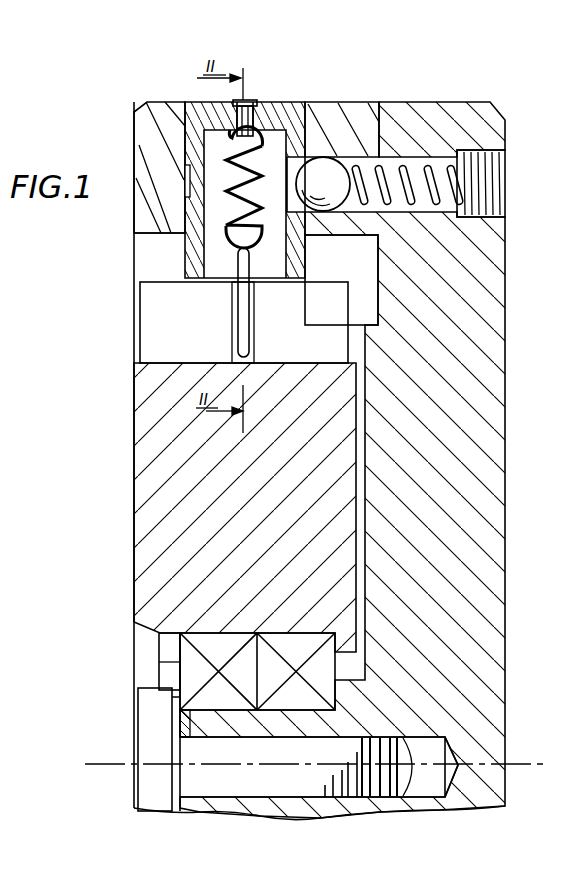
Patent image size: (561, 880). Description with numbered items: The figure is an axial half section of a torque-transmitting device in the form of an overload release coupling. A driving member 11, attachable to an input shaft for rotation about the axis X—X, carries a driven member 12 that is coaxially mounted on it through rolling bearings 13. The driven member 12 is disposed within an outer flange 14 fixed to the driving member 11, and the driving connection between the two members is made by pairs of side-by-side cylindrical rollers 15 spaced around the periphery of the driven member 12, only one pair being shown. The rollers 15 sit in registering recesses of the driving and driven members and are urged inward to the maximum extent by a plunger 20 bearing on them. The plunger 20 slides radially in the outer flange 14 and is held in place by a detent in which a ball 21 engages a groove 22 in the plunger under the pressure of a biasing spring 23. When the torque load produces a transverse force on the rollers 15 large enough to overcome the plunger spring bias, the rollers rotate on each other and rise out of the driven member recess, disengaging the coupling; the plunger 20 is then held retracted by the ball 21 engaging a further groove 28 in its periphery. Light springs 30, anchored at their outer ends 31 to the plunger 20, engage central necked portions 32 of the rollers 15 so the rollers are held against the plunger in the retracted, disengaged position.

The driving member 11 is at (492, 528).
The driven member 12 is at (134, 407).
The rolling bearings 13 is at (159, 662).
The outer flange 14 is at (157, 138).
The cylindrical rollers 15 is at (160, 318).
The plunger 20 is at (203, 112).
The ball 21 is at (323, 175).
The groove 22 is at (302, 160).
The biasing spring 23 is at (402, 162).
The further groove 28 is at (186, 235).
The light springs 30 is at (223, 183).
The outer ends 31 is at (160, 142).
The central necked portions 32 is at (250, 307).